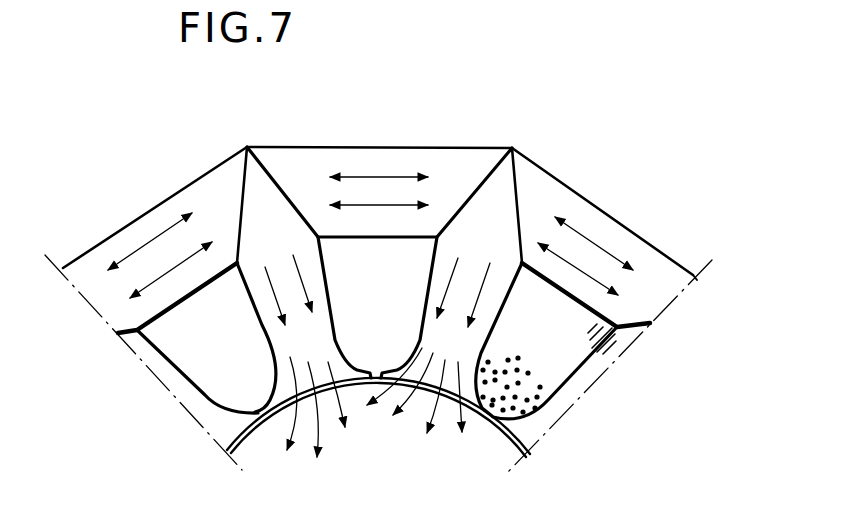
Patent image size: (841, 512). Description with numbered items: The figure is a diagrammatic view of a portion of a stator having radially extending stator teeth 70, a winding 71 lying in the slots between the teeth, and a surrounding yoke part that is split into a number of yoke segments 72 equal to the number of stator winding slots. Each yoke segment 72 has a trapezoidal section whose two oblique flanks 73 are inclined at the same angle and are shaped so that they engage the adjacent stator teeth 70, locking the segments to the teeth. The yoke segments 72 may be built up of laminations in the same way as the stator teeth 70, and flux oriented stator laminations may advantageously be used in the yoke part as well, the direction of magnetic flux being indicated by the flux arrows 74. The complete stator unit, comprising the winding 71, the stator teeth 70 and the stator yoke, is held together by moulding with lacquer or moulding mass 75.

The stator teeth 70 is at (498, 193).
The winding 71 is at (527, 375).
The yoke segment 72 is at (440, 163).
The oblique flanks 73 is at (241, 190).
The flux arrows 74 is at (372, 177).
The moulding mass 75 is at (603, 313).